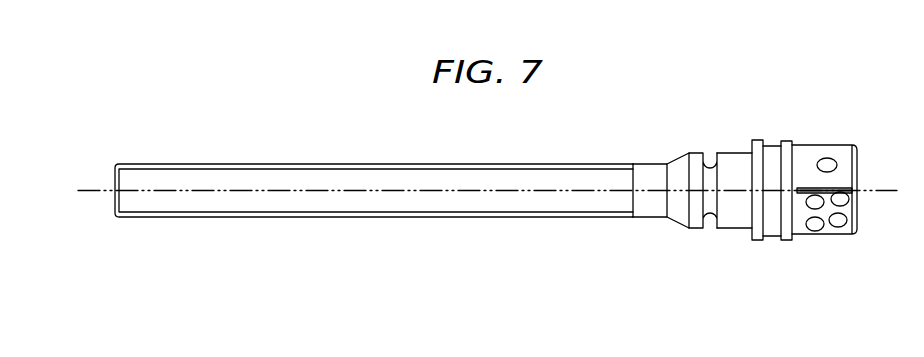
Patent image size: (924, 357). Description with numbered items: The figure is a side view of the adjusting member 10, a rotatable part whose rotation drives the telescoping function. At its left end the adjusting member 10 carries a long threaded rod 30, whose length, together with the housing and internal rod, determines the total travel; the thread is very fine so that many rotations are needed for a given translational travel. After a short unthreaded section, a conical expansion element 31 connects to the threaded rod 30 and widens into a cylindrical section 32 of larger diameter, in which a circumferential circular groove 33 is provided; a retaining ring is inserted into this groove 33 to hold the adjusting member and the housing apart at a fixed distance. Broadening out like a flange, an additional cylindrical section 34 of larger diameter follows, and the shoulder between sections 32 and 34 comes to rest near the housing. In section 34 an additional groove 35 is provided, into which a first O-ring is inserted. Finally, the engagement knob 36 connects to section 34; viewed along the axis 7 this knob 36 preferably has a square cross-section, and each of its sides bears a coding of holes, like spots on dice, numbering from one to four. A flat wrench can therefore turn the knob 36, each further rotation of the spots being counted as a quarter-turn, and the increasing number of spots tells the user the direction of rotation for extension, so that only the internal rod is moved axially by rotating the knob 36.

The axis 7 is at (230, 190).
The adjusting member 10 is at (460, 232).
The threaded rod 30 is at (325, 169).
The conical expansion element 31 is at (682, 156).
The cylindrical section 32 is at (730, 229).
The groove 33 is at (708, 230).
The additional cylindrical section 34 is at (789, 141).
The additional groove 35 is at (770, 136).
The engagement knob 36 is at (841, 226).